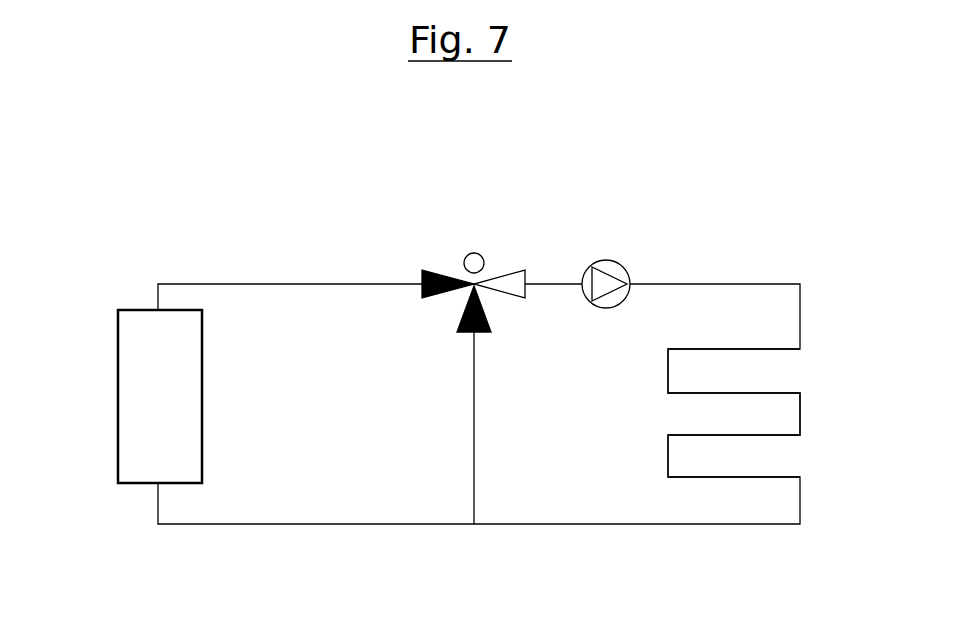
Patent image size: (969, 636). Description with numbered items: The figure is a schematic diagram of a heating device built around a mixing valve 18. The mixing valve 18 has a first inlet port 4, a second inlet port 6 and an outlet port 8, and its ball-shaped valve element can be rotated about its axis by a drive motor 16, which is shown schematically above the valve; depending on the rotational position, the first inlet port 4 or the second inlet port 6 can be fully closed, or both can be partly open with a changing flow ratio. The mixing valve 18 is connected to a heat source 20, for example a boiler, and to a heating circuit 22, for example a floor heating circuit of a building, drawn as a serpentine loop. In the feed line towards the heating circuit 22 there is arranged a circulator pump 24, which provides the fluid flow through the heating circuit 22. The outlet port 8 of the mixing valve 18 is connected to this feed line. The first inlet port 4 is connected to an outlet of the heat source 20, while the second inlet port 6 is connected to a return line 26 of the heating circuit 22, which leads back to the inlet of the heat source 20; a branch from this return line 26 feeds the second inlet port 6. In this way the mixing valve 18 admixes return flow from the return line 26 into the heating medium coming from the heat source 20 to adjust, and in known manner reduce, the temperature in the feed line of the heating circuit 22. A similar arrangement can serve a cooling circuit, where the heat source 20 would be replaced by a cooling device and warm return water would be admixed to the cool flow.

The first inlet port 4 is at (424, 272).
The second inlet port 6 is at (457, 328).
The outlet port 8 is at (524, 272).
The drive motor 16 is at (447, 234).
The mixing valve 18 is at (458, 226).
The heat source 20 is at (130, 388).
The heating circuit 22 is at (778, 372).
The circulator pump 24 is at (624, 264).
The return line 26 is at (580, 524).